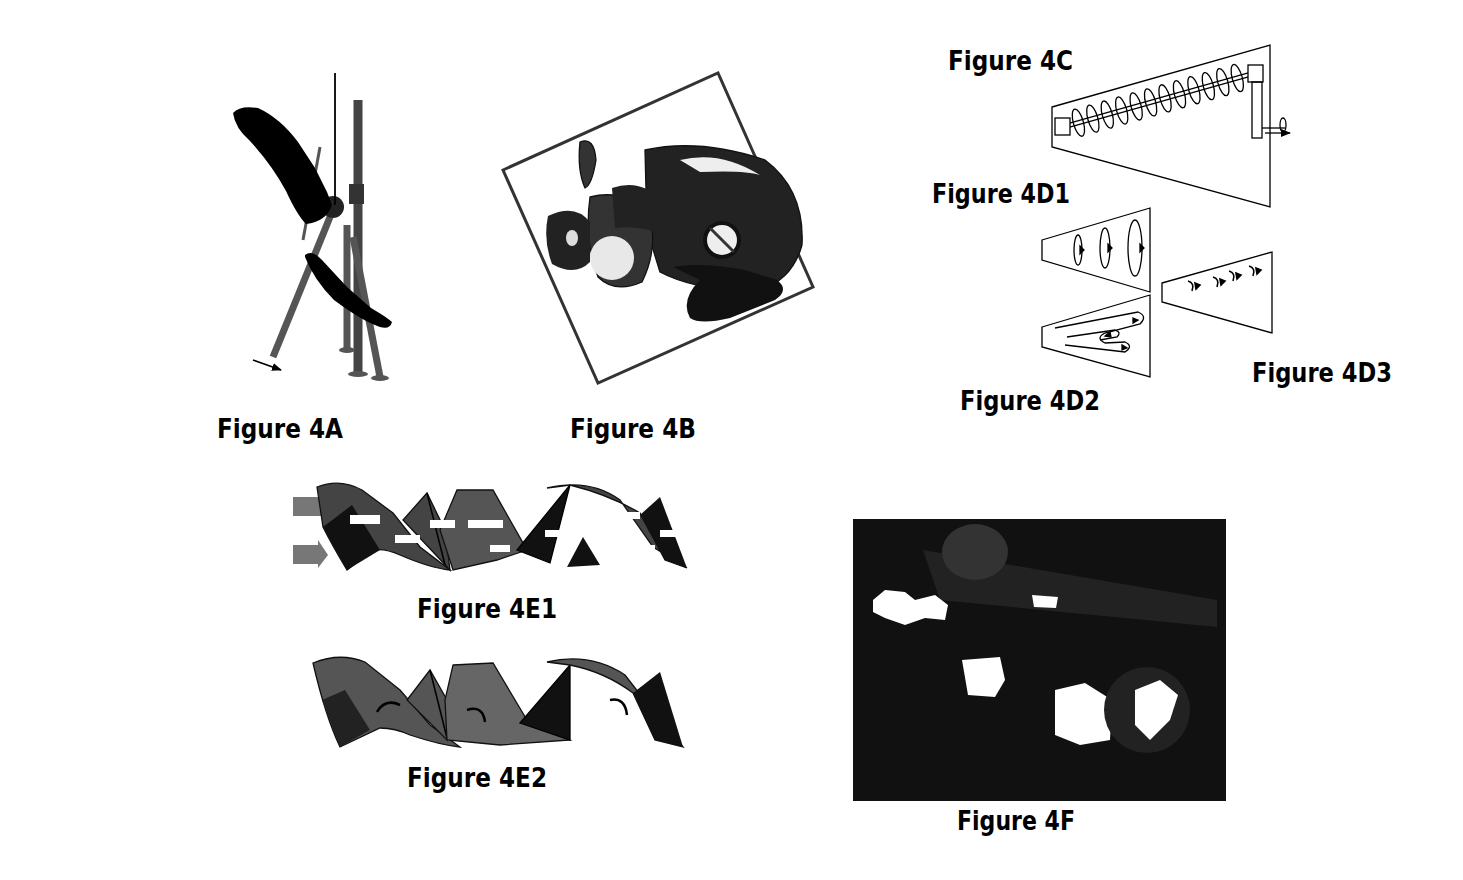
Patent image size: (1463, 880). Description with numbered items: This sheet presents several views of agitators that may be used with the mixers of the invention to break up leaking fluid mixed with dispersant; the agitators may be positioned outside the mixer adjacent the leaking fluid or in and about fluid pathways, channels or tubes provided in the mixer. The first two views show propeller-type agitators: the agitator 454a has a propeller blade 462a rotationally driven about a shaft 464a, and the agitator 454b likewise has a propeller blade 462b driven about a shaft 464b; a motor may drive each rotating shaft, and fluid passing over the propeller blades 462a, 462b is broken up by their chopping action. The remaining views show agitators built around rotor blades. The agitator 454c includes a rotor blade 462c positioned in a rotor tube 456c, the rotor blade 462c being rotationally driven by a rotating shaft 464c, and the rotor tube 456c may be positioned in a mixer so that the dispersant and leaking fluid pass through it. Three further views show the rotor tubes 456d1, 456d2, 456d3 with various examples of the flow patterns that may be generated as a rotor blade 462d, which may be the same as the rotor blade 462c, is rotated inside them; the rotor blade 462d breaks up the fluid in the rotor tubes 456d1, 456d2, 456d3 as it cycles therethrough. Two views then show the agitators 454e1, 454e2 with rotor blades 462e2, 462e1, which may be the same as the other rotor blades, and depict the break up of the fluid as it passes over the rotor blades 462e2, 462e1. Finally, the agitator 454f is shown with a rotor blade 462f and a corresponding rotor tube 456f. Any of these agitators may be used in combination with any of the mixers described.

In FIG. 4A, the agitator 454a is at (201, 88).
In FIG. 4A, the propeller blade 462a is at (263, 163).
In FIG. 4A, the shaft 464a is at (326, 126).
In FIG. 4B, the agitator 454b is at (554, 107).
In FIG. 4B, the propeller blade 462b is at (600, 280).
In FIG. 4B, the shaft 464b is at (638, 200).
In FIG. 4C, the agitator 454c is at (1019, 110).
In FIG. 4C, the rotor blade 462c is at (1182, 90).
In FIG. 4C, the rotating shaft 464c is at (1304, 110).
In FIG. 4C, the rotor tube 456c is at (1270, 187).
In FIG. 4D1, the rotor blade 462d is at (1148, 228).
In FIG. 4D2, the rotor blade 462d is at (1070, 333).
In FIG. 4D3, the rotor blade 462d is at (1255, 272).
In FIG. 4D1, the rotor tube 456d1 is at (1060, 265).
In FIG. 4D2, the rotor tube 456d2 is at (1150, 375).
In FIG. 4D3, the rotor tube 456d3 is at (1273, 302).
In FIG. 4E1, the agitator 454e1 is at (259, 505).
In FIG. 4E1, the rotor blade 462e2 is at (343, 567).
In FIG. 4E2, the agitator 454e2 is at (282, 683).
In FIG. 4E2, the rotor blade 462e1 is at (337, 733).
In FIG. 4F, the agitator 454f is at (1281, 517).
In FIG. 4F, the rotor tube 456f is at (1217, 610).
In FIG. 4F, the rotor blade 462f is at (1180, 700).